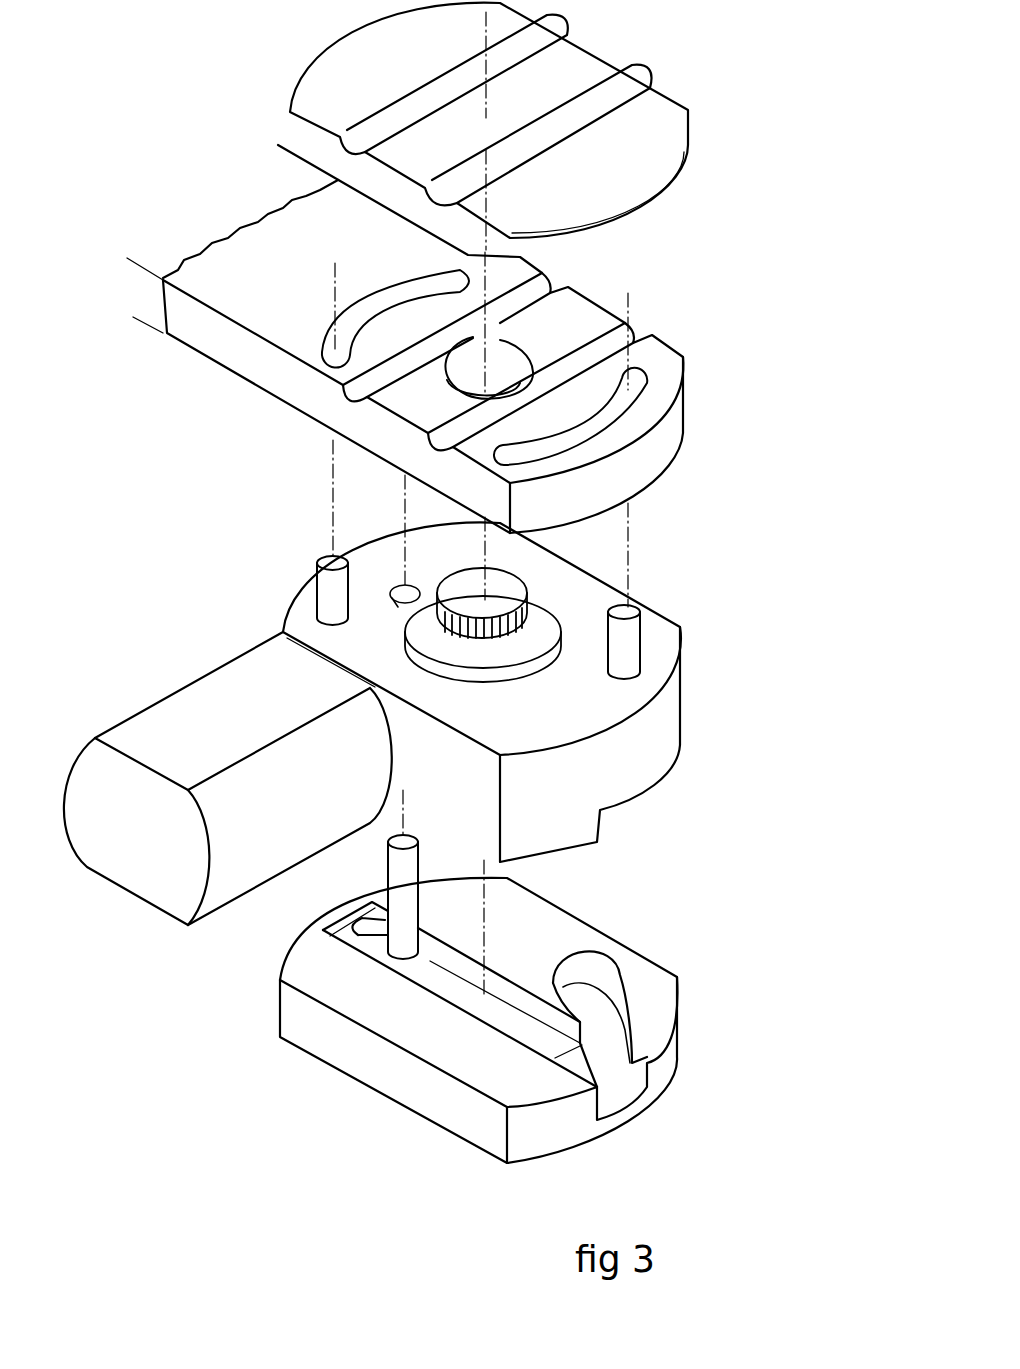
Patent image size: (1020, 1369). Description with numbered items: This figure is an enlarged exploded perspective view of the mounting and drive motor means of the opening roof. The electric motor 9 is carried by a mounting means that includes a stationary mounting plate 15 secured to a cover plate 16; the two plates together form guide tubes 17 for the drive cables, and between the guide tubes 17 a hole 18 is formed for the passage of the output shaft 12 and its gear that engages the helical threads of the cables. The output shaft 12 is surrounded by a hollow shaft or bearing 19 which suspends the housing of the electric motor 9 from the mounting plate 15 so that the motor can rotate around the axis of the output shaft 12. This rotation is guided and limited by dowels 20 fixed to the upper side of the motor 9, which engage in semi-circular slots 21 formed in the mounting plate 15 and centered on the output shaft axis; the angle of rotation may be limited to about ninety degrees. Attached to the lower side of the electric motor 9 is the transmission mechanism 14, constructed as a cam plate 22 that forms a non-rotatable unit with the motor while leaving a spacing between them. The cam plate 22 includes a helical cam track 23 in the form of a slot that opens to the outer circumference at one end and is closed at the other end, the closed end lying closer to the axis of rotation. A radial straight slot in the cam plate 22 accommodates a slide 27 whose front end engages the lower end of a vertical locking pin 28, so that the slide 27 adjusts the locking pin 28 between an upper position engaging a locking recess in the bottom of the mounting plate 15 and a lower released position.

The electric motor 9 is at (650, 748).
The output shaft 12 is at (523, 575).
The transmission mechanism 14 is at (627, 905).
The mounting plate 15 is at (670, 435).
The cover plate 16 is at (665, 144).
The guide tubes 17 is at (440, 450).
The bore 18 is at (500, 353).
The hollow shaft or bearing 19 is at (513, 583).
The dowels 20 is at (325, 562).
The semi-circular slots 21 is at (350, 317).
The cam plate 22 is at (663, 1060).
The cam track 23 is at (590, 990).
The slide 27 is at (543, 1027).
The locking pin 28 is at (413, 880).